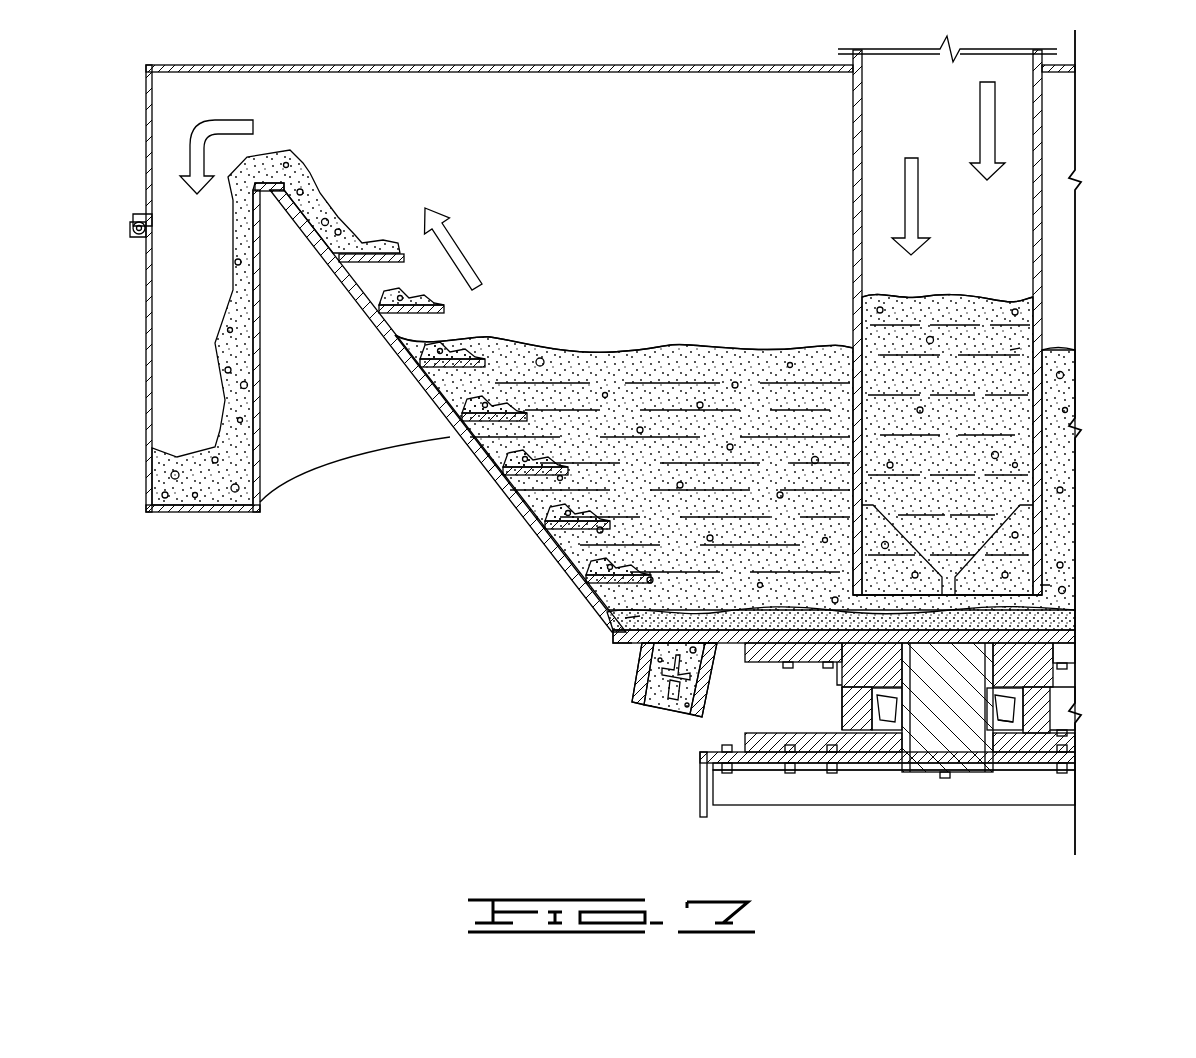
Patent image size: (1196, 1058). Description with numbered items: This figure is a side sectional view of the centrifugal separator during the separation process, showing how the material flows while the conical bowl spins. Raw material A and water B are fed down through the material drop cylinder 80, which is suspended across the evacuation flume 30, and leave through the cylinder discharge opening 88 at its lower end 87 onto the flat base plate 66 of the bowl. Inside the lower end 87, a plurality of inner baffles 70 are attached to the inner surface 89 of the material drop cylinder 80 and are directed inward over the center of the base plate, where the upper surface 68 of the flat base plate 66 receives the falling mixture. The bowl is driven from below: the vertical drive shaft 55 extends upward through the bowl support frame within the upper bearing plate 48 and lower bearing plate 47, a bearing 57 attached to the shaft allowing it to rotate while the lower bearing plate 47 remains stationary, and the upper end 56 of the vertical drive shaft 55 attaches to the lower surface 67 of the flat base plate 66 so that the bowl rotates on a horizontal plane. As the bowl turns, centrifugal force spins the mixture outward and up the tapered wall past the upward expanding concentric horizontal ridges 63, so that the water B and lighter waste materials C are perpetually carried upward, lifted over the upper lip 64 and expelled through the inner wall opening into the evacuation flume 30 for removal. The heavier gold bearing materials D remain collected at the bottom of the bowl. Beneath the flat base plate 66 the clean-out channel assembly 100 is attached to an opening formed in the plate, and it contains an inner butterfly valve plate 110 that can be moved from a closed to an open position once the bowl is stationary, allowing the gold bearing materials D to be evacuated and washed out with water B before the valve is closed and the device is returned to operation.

The evacuation flume 30 is at (147, 287).
The lower bearing plate 47 is at (1062, 745).
The upper bearing plate 48 is at (1015, 678).
The vertical drive shaft 55 is at (925, 762).
The upper end of vertical drive shaft 56 is at (1000, 660).
The bearing 57 is at (1005, 710).
The concentric horizontal ridges 63 is at (365, 268).
The upper lip 64 is at (273, 183).
The flat base plate 66 is at (612, 636).
The lower surface of flat base plate 67 is at (727, 645).
The upper surface of flat base plate 68 is at (830, 655).
The inner baffles 70 is at (1025, 540).
The material drop cylinder 80 is at (1043, 143).
The lower end of material drop cylinder 87 is at (1040, 585).
The cylinder discharge opening 88 is at (1018, 597).
The inner surface of material drop cylinder 89 is at (1011, 232).
The clean-out channel assembly 100 is at (640, 690).
The butterfly valve plate 110 is at (650, 700).
The raw material A is at (1010, 350).
The water B is at (682, 345).
The waste materials C is at (165, 468).
The gold bearing materials D is at (632, 618).